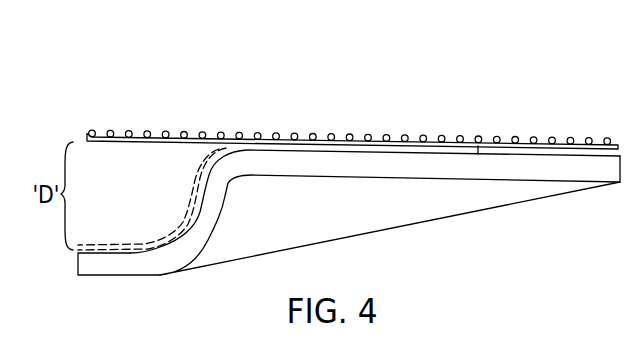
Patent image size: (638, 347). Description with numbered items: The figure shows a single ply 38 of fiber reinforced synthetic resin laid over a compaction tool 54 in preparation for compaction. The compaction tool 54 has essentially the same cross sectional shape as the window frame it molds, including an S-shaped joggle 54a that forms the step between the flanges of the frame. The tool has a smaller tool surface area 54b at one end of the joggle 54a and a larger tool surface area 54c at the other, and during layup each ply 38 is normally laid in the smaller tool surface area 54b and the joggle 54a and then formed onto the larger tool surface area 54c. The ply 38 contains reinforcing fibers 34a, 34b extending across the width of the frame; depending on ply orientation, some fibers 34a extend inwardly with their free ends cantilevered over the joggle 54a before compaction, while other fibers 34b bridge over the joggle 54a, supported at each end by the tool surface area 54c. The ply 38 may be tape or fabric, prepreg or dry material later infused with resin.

The ply 38 is at (352, 77).
The reinforcing fibers 34a is at (192, 137).
The reinforcing fibers 34b is at (238, 130).
The compaction tool 54 is at (316, 154).
The joggle 54a is at (161, 200).
The smaller tool surface area 54b is at (128, 252).
The larger tool surface area 54c is at (479, 133).